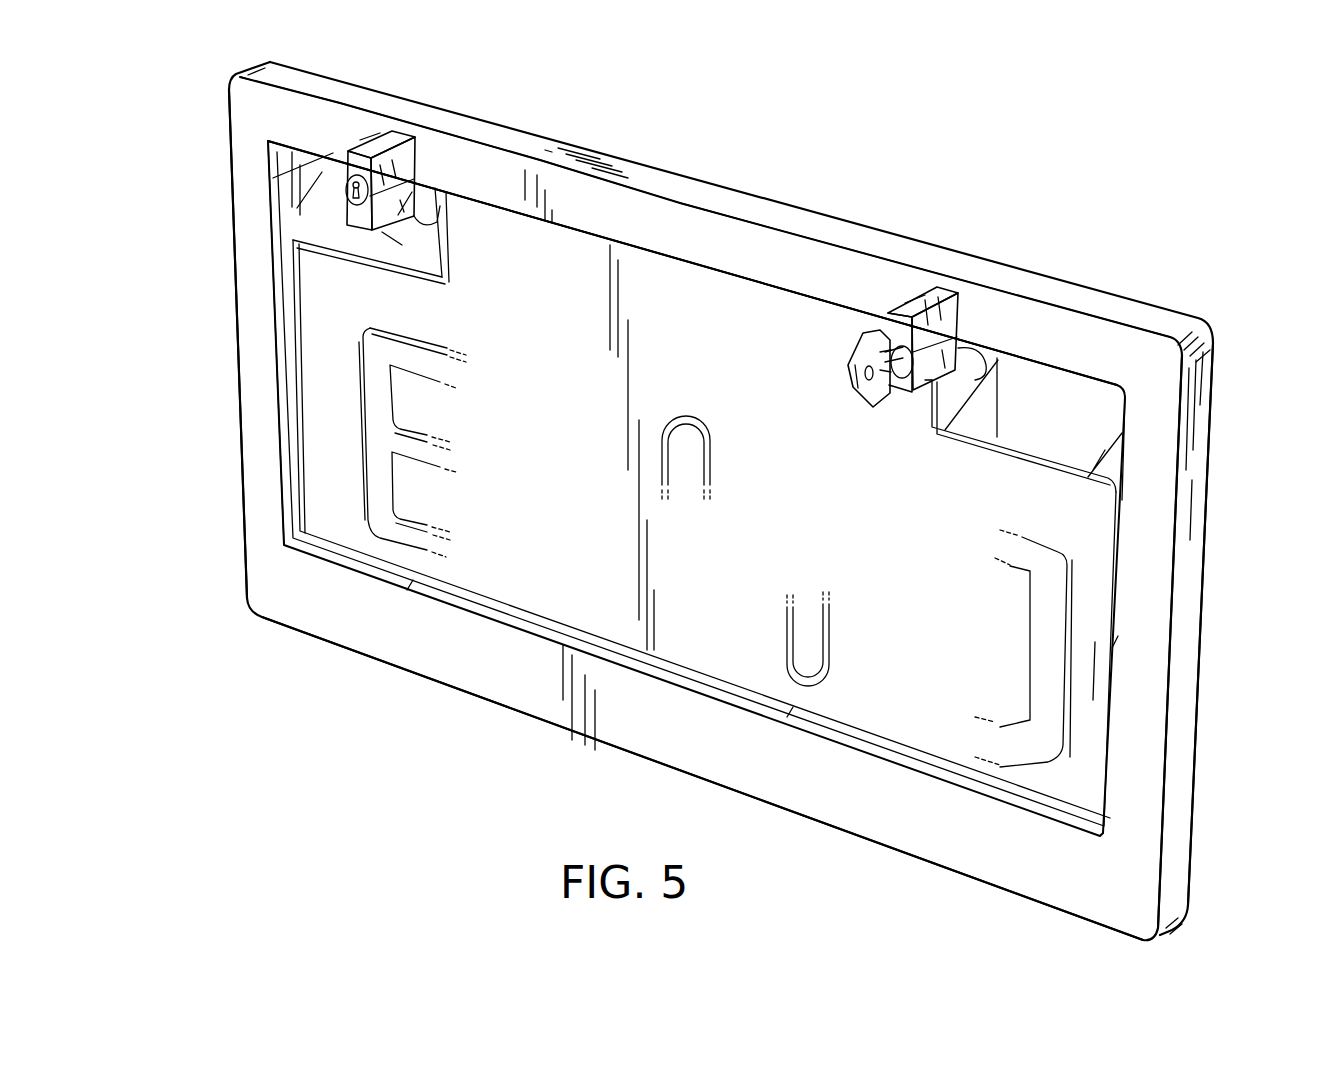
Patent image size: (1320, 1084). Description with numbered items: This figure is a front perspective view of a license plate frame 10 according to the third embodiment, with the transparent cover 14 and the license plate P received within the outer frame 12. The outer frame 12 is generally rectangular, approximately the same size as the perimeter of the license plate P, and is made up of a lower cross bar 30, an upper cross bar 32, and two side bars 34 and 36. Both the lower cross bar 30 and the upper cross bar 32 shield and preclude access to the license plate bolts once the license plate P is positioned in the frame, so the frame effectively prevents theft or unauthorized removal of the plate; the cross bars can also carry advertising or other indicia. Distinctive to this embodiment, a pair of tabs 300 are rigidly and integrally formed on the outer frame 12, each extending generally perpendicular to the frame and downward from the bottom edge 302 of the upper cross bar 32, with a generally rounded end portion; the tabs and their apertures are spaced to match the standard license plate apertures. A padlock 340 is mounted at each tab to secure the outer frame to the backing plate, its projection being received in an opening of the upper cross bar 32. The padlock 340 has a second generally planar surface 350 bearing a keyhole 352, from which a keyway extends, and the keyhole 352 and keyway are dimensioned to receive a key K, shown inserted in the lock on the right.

The license plate frame 10 is at (1025, 192).
The outer frame 12 is at (727, 193).
The transparent cover 14 is at (1063, 476).
The lower cross bar 30 is at (545, 694).
The upper cross bar 32 is at (783, 247).
The side bar 34 is at (1152, 703).
The side bar 36 is at (258, 440).
The tab 300 is at (433, 213).
The bottom edge 302 is at (693, 267).
The padlock 340 is at (398, 137).
The second generally planar surface 350 is at (365, 222).
The keyhole 352 is at (352, 187).
The key K is at (868, 400).
The license plate P is at (513, 546).